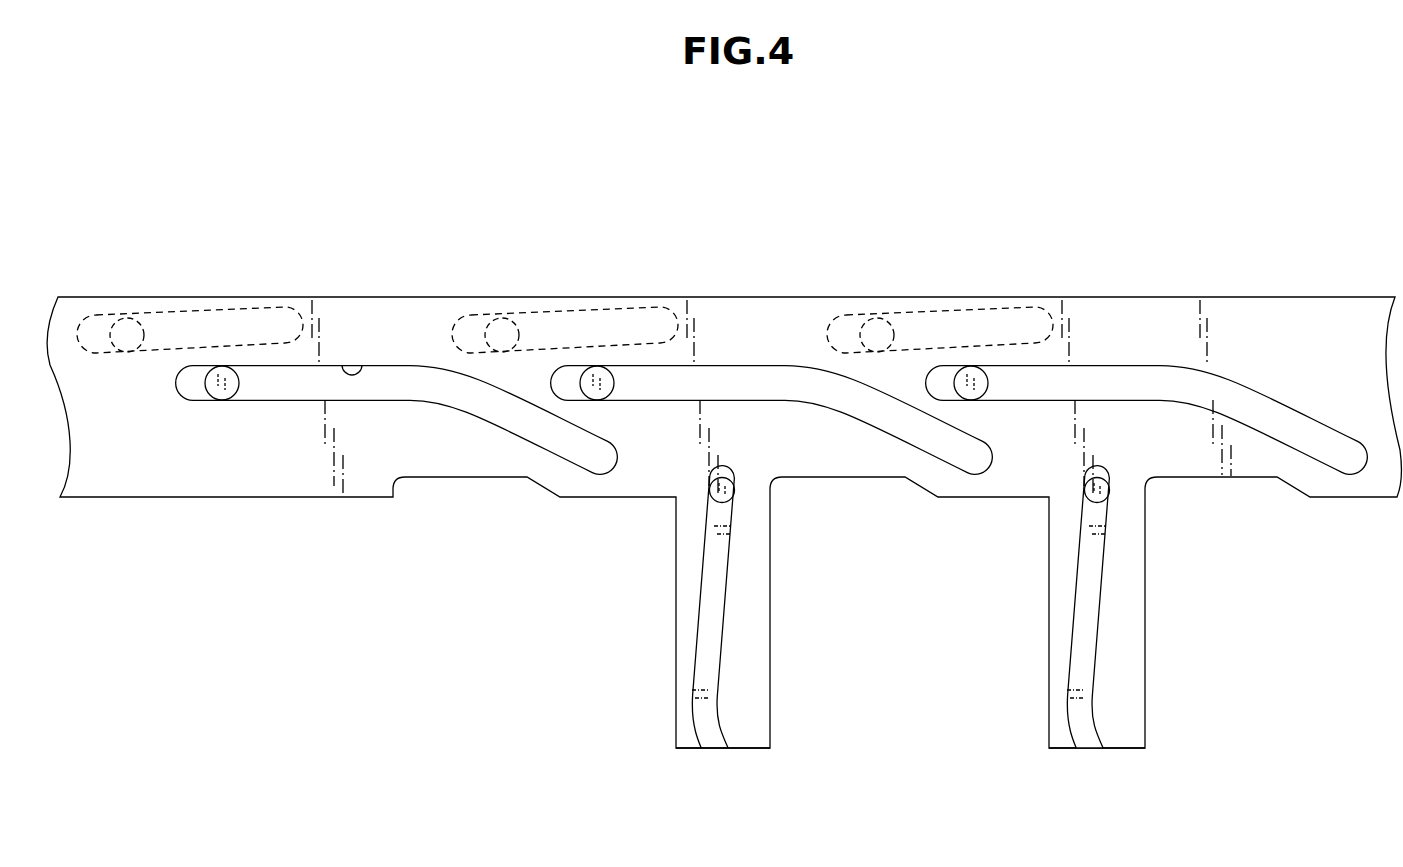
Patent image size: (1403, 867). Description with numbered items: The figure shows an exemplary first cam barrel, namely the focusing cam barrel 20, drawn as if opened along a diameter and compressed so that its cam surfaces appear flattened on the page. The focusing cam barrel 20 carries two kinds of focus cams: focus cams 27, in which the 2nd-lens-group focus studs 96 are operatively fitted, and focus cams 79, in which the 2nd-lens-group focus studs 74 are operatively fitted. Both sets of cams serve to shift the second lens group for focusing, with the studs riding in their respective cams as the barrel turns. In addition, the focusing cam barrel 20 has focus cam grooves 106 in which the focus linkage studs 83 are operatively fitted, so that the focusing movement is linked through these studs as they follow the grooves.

The focusing cam barrel 20 is at (1236, 297).
The focus cam 27 is at (180, 324).
The focus cam 79 is at (363, 365).
The 2nd-lens-group focus stud 74 is at (607, 370).
The 2nd-lens-group focus stud 96 is at (897, 333).
The focus linkage stud 83 is at (1108, 492).
The focus cam groove 106 is at (1092, 614).